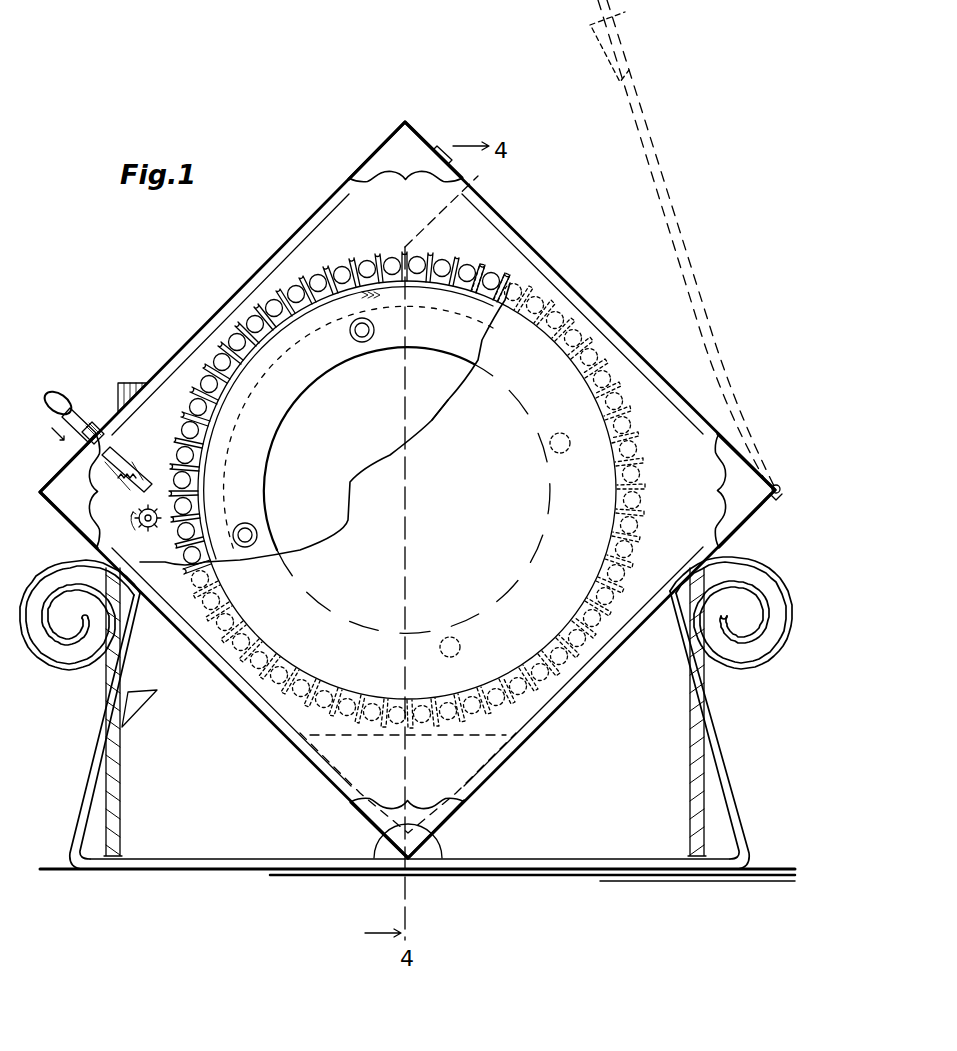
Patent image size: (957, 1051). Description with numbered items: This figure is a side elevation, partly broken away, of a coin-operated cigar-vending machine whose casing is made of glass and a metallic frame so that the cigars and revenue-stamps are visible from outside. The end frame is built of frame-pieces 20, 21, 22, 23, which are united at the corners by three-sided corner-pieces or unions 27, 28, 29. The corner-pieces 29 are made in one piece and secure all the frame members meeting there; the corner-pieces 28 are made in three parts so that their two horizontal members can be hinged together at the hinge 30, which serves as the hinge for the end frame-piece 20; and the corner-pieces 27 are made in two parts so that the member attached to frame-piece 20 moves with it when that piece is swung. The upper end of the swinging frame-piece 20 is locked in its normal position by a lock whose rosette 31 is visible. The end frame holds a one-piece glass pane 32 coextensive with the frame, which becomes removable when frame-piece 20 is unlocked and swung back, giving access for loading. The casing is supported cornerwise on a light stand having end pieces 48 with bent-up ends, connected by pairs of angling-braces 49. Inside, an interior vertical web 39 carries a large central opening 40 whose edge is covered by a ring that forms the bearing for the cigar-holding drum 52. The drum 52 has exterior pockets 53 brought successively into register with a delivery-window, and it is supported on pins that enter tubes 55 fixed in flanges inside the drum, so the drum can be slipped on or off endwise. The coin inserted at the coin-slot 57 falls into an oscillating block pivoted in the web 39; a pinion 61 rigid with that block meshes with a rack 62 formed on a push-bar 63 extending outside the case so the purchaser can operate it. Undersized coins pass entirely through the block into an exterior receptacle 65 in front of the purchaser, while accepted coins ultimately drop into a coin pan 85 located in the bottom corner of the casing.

The end frame-piece 20 is at (584, 317).
The end frame-piece 21 is at (587, 678).
The end frame-piece 22 is at (231, 667).
The end frame-piece 23 is at (205, 325).
The corner-piece 27 is at (405, 152).
The corner-piece 28 is at (745, 490).
The corner-piece 29 is at (252, 646).
The hinge 30 is at (779, 485).
The rosette of lock 31 is at (441, 148).
The glass pane 32 is at (429, 437).
The web 39 is at (316, 383).
The central opening 40 is at (325, 424).
The end piece 48 is at (723, 783).
The angling-brace 49 is at (690, 787).
The cigar-holding drum 52 is at (270, 355).
The pocket 53 is at (312, 303).
The tube 55 is at (375, 331).
The coin-slot 57 is at (137, 393).
The pinion 61 is at (146, 532).
The rack 62 is at (125, 483).
The push-bar 63 is at (70, 418).
The receptacle 65 is at (157, 690).
The coin pan 85 is at (355, 772).